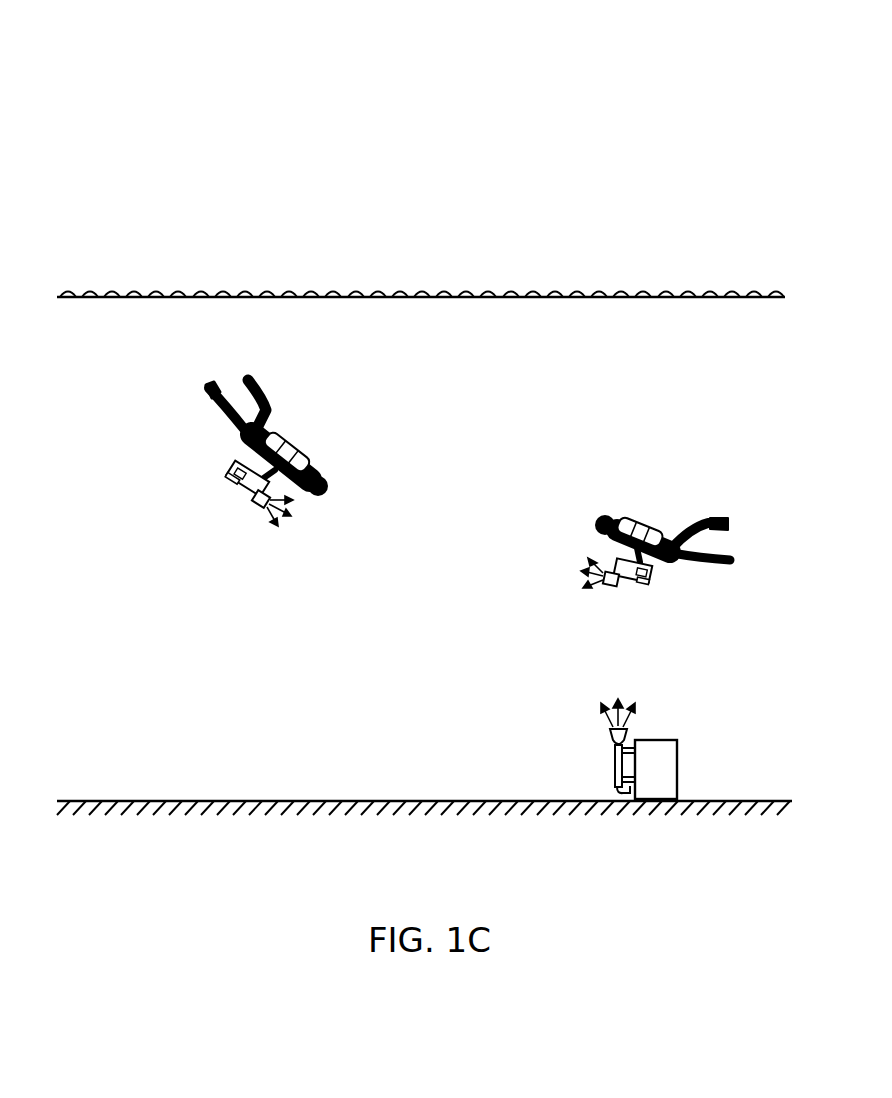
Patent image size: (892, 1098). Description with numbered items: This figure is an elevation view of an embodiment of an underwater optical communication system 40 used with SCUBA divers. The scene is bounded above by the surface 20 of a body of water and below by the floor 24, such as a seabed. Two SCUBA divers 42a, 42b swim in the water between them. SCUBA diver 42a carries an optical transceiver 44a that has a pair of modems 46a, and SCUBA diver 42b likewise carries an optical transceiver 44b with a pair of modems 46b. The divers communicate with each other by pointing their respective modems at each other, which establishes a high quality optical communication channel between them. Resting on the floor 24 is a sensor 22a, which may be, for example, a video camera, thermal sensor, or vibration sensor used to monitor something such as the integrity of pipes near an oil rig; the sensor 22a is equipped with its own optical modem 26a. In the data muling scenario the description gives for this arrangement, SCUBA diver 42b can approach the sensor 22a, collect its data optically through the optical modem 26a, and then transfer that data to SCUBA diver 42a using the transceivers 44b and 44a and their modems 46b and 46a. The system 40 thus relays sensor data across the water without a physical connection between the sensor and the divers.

The underwater optical communication system 40 is at (706, 56).
The surface 20 is at (532, 294).
The floor 24 is at (412, 800).
The sensor 22a is at (677, 740).
The optical modem 26a is at (609, 735).
The SCUBA diver 42a is at (288, 440).
The SCUBA diver 42b is at (622, 515).
The optical transceiver 44a is at (232, 470).
The optical transceiver 44b is at (651, 573).
The pair of modems 46a is at (258, 508).
The pair of modems 46b is at (617, 590).